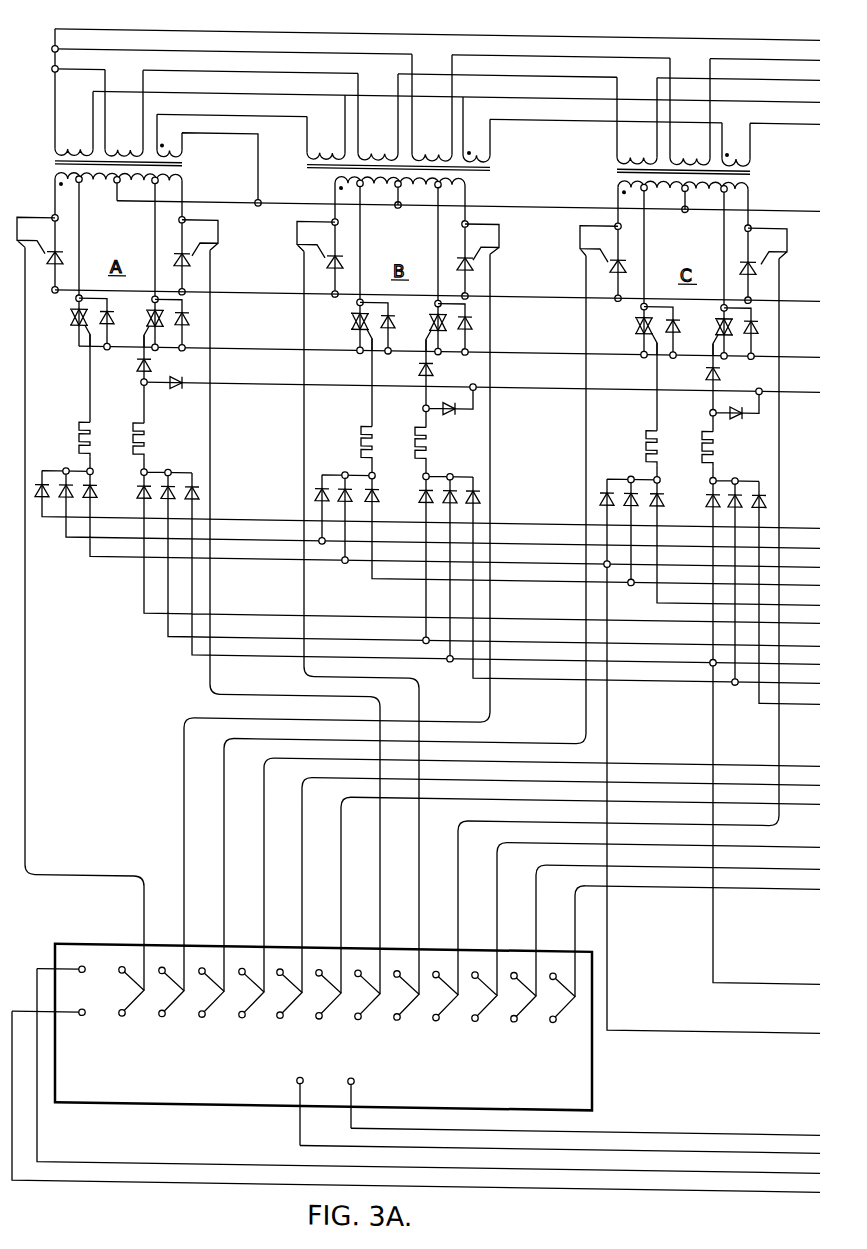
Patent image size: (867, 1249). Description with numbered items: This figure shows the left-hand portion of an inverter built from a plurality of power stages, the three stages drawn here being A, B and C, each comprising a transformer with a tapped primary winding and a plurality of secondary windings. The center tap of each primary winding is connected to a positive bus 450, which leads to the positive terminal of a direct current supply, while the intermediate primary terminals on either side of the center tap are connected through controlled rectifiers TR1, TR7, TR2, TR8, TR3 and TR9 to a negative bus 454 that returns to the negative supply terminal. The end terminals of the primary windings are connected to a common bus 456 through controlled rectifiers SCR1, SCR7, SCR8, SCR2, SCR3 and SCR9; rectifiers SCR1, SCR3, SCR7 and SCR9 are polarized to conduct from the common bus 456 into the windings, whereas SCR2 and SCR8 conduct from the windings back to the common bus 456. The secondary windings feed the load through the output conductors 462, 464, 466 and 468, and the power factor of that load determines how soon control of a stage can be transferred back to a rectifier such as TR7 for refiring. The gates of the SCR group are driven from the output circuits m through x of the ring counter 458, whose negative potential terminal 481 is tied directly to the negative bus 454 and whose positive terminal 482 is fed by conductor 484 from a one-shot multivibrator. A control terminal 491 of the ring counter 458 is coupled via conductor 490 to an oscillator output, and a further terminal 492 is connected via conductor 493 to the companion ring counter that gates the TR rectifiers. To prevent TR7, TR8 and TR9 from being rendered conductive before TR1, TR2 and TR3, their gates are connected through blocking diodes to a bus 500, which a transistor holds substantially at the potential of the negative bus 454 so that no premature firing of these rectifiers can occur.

The conductor 462 is at (276, 27).
The conductor 464 is at (275, 47).
The conductor 466 is at (275, 67).
The conductor 468 is at (275, 89).
The positive bus 450 is at (220, 198).
The common bus 456 is at (263, 284).
The negative bus 454 is at (273, 346).
The bus 500 is at (255, 380).
The ring counter 458 is at (648, 1072).
The positive terminal 482 is at (66, 969).
The negative potential terminal 481 is at (53, 1018).
The control terminal 491 is at (297, 1076).
The terminal 492 is at (355, 1076).
The conductor 493 is at (650, 1122).
The conductor 490 is at (650, 1141).
The conductor 484 is at (650, 1161).
The controlled rectifier SCR1 is at (65, 256).
The controlled rectifier SCR7 is at (170, 261).
The controlled rectifier SCR8 is at (325, 233).
The controlled rectifier SCR2 is at (470, 233).
The controlled rectifier SCR3 is at (628, 258).
The controlled rectifier SCR9 is at (737, 255).
The controlled rectifier TR1 is at (72, 312).
The controlled rectifier TR7 is at (147, 312).
The controlled rectifier TR2 is at (355, 312).
The controlled rectifier TR8 is at (430, 313).
The controlled rectifier TR3 is at (633, 315).
The controlled rectifier TR9 is at (713, 314).